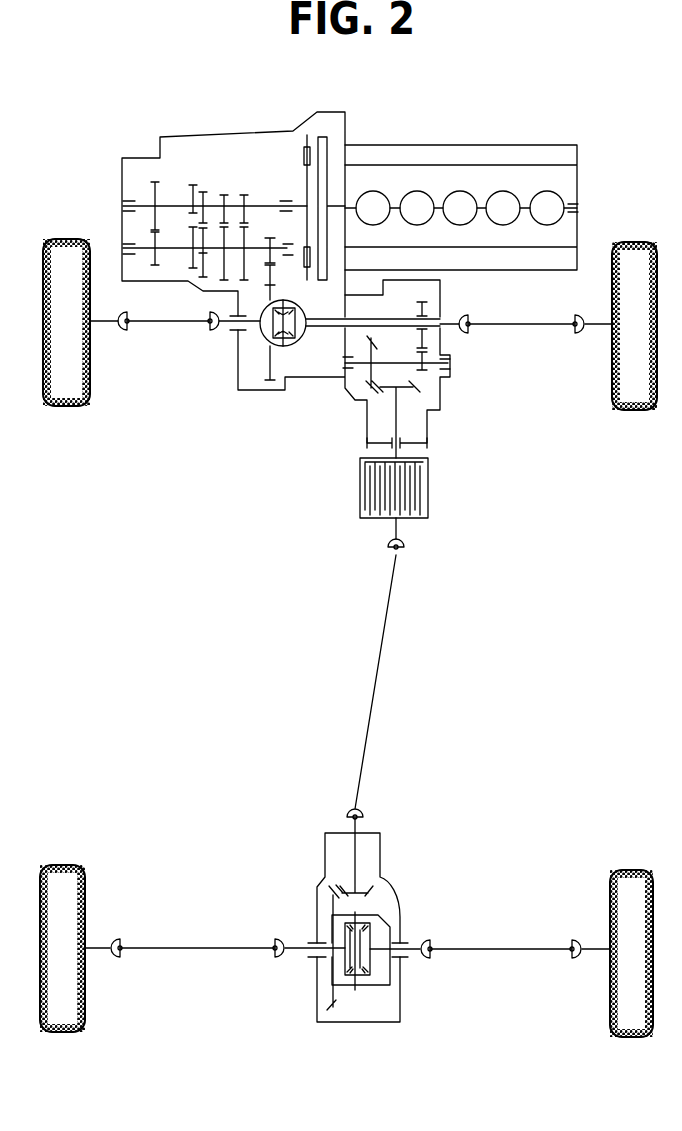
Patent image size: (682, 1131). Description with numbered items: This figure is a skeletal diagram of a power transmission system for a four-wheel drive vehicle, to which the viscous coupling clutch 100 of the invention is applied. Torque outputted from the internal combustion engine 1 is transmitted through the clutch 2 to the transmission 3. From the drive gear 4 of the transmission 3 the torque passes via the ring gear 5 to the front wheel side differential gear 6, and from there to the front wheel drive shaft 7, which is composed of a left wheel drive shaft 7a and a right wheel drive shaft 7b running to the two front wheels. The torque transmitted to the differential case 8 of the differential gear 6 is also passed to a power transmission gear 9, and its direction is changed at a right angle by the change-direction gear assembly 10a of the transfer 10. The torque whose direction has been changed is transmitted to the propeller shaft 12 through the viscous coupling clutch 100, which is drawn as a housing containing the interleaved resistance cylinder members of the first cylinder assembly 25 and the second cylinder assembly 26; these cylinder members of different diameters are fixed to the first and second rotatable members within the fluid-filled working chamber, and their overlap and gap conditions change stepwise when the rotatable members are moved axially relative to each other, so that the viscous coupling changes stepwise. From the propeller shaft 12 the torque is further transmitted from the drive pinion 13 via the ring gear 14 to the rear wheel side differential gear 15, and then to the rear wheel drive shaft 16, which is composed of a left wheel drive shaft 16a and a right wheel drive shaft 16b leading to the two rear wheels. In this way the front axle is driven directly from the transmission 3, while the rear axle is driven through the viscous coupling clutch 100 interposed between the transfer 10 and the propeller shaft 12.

The internal combustion engine 1 is at (482, 158).
The clutch 2 is at (331, 143).
The transmission 3 is at (178, 166).
The drive gear 4 is at (272, 244).
The ring gear 5 is at (273, 287).
The front wheel side differential gear 6 is at (258, 346).
The front wheel drive shaft 7 is at (274, 352).
The left wheel drive shaft 7a is at (160, 321).
The right wheel drive shaft 7b is at (531, 322).
The differential case 8 is at (307, 310).
The power transmission gear 9 is at (428, 308).
The transfer 10 is at (393, 377).
The change-direction gear assembly 10a is at (367, 373).
The propeller shaft 12 is at (376, 706).
The drive pinion 13 is at (361, 891).
The ring gear 14 is at (318, 902).
The rear wheel side differential gear 15 is at (368, 920).
The rear wheel drive shaft 16 is at (269, 939).
The left wheel drive shaft 16a is at (185, 947).
The right wheel drive shaft 16b is at (490, 948).
The first cylinder assembly 25 is at (429, 470).
The second cylinder assembly 26 is at (360, 510).
The viscous coupling clutch 100 is at (471, 494).